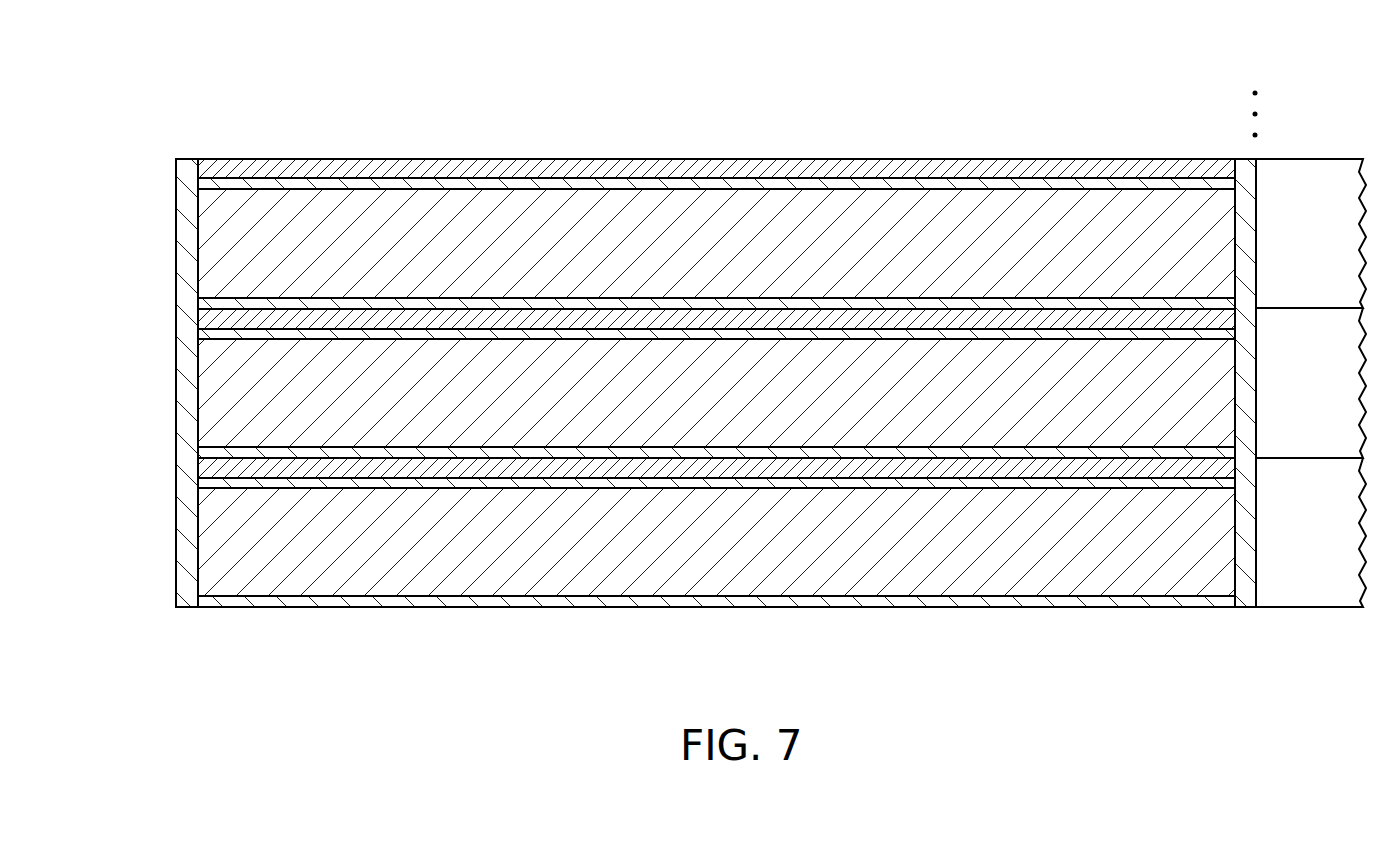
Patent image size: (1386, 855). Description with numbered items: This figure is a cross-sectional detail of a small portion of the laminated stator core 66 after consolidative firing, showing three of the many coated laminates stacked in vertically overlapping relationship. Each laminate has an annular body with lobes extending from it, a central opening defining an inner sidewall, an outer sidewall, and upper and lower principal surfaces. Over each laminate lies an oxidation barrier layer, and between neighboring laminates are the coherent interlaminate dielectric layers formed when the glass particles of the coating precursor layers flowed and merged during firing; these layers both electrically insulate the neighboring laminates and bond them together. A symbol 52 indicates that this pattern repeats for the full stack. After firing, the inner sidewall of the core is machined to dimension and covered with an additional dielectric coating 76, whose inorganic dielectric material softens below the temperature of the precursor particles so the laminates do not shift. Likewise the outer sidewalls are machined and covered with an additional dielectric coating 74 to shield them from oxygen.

The symbol 52 is at (1275, 60).
The laminated stator core 66 is at (303, 155).
The dielectric coating 74 is at (176, 168).
The dielectric coating 76 is at (1256, 180).